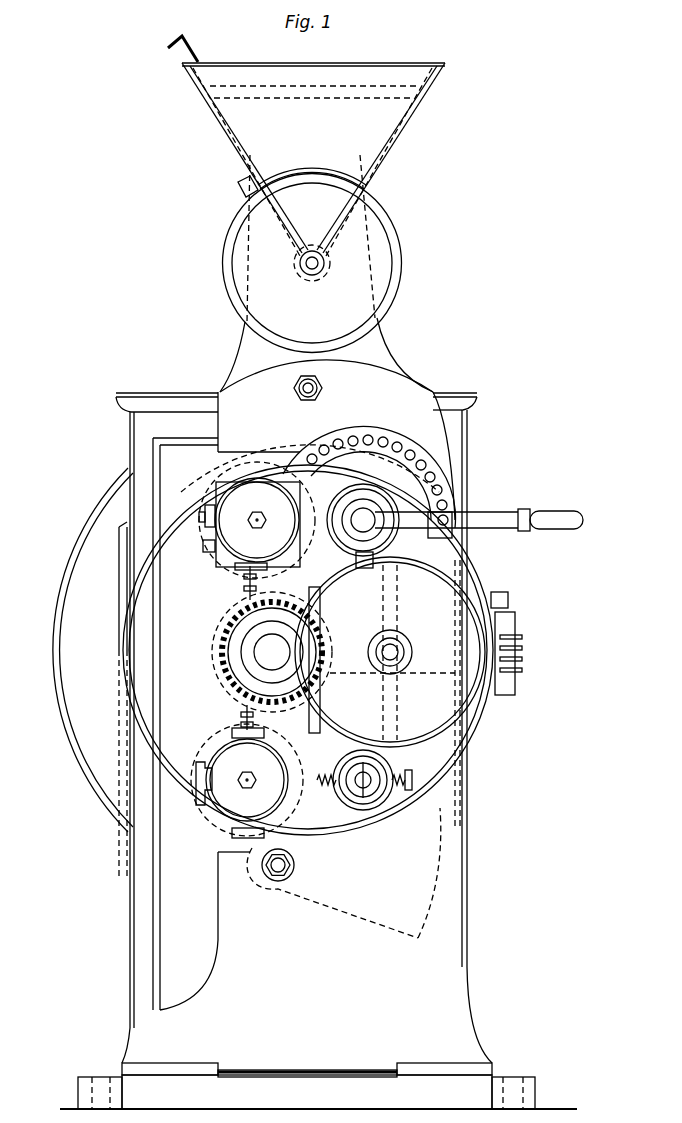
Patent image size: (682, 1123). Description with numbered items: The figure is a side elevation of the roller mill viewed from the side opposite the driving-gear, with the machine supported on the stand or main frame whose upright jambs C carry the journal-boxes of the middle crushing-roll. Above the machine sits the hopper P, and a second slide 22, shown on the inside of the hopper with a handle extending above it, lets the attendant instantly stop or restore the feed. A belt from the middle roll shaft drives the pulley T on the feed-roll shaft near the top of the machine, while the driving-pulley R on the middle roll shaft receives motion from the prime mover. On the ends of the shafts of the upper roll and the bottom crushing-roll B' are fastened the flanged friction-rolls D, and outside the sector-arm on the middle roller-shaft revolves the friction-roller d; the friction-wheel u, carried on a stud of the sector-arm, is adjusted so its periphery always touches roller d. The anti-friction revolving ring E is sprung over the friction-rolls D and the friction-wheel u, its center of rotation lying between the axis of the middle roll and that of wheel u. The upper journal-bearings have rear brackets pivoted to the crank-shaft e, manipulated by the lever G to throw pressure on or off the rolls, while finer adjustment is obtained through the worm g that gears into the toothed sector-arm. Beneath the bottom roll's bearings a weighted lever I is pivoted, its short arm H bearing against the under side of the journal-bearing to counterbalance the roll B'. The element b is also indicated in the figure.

The second slide 22 is at (195, 46).
The hopper P is at (313, 192).
The pulley on the feed-roll shaft T is at (320, 263).
The upright jambs C is at (318, 713).
The friction-rolls D is at (253, 650).
The crank-shaft e is at (360, 647).
The lever G is at (479, 511).
The stop b is at (452, 568).
The bottom crushing-roll B' is at (192, 651).
The friction-roller d is at (272, 652).
The driving-pulley R is at (265, 640).
The anti-friction revolving ring E is at (298, 701).
The worm g is at (514, 643).
The friction-wheel u is at (390, 652).
The weighted lever I is at (344, 873).
The short arm H is at (262, 866).